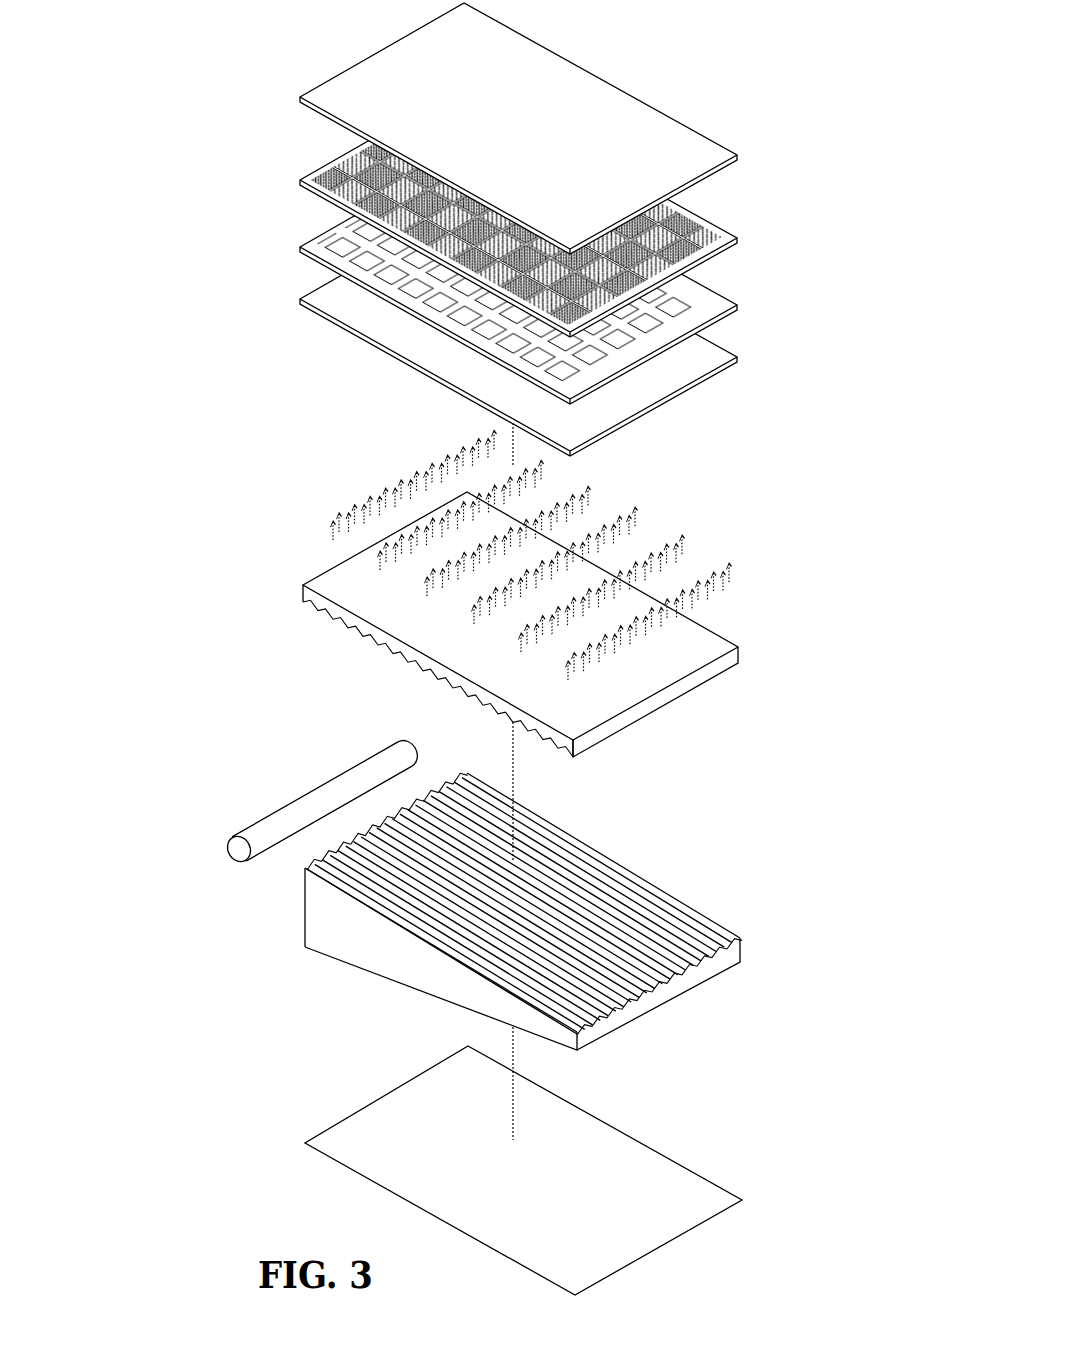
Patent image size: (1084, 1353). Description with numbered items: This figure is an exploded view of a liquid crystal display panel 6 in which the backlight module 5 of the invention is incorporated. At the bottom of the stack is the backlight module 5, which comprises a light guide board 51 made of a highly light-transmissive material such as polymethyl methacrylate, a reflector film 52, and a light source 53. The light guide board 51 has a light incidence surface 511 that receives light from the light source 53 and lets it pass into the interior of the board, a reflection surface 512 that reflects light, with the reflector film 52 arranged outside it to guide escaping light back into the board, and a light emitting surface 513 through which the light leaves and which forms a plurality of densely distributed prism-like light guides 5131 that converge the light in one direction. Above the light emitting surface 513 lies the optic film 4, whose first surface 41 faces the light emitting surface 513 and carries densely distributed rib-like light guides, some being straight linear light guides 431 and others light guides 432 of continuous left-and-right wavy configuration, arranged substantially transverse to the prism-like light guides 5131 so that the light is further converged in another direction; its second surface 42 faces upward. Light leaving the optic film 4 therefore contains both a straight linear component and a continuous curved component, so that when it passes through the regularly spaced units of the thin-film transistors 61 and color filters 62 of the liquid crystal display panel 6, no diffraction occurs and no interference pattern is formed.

The liquid crystal display panel 6 is at (547, 229).
The color filters 62 is at (707, 223).
The thin-film transistors 61 is at (707, 290).
The optic film 4 is at (512, 622).
The first surface 41 is at (505, 700).
The second surface 42 is at (703, 640).
The straight linear light guides 431 is at (568, 760).
The light guides having a continuous left-and-right wavy configuration 432 is at (533, 740).
The backlight module 5 is at (477, 1002).
The light guide board 51 is at (484, 911).
The light incidence surface 511 is at (305, 918).
The reflection surface 512 is at (372, 975).
The light emitting surface 513 is at (536, 906).
The prism-like light guides 5131 is at (680, 977).
The reflector film 52 is at (612, 1142).
The light source 53 is at (270, 825).